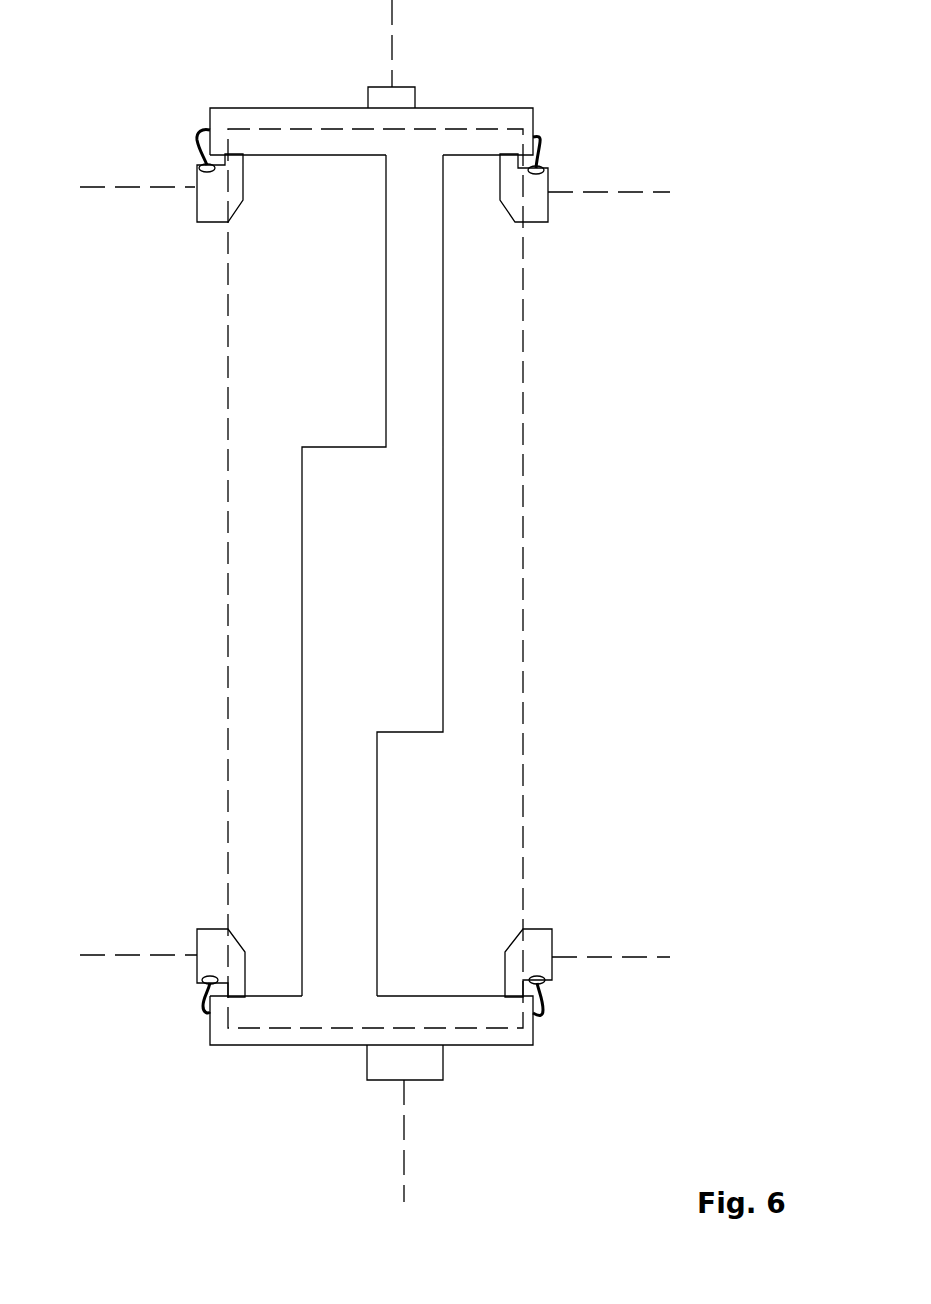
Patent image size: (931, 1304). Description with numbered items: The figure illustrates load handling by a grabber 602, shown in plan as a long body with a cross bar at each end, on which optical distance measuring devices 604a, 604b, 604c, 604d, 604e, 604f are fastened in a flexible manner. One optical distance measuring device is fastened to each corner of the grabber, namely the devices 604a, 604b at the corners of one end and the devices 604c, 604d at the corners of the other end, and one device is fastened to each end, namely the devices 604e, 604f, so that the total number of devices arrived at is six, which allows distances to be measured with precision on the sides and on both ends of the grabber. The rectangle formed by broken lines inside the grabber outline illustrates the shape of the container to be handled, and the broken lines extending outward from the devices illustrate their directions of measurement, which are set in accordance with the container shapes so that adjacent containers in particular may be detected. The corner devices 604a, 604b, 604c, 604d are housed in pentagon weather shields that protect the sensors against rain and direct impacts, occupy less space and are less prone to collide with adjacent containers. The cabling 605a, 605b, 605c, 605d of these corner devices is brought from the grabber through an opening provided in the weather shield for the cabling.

The grabber 602 is at (372, 575).
The optical distance measuring device 604a is at (197, 218).
The optical distance measuring device 604b is at (548, 218).
The optical distance measuring device 604c is at (197, 940).
The optical distance measuring device 604d is at (552, 940).
The optical distance measuring device 604e is at (368, 92).
The optical distance measuring device 604f is at (393, 1080).
The cabling 605a is at (197, 131).
The cabling 605b is at (545, 150).
The cabling 605c is at (203, 1003).
The cabling 605d is at (545, 1013).